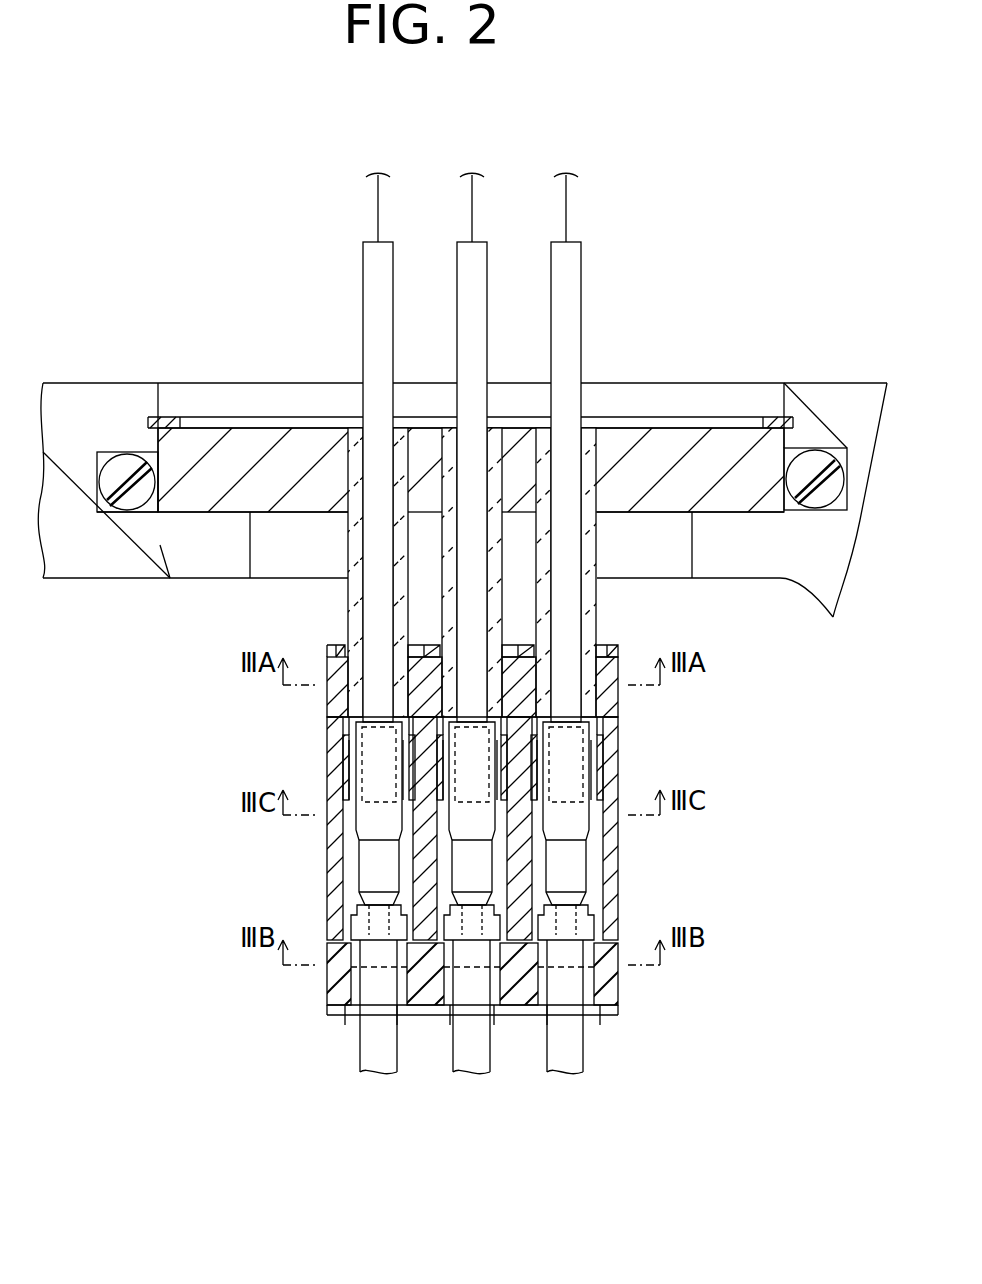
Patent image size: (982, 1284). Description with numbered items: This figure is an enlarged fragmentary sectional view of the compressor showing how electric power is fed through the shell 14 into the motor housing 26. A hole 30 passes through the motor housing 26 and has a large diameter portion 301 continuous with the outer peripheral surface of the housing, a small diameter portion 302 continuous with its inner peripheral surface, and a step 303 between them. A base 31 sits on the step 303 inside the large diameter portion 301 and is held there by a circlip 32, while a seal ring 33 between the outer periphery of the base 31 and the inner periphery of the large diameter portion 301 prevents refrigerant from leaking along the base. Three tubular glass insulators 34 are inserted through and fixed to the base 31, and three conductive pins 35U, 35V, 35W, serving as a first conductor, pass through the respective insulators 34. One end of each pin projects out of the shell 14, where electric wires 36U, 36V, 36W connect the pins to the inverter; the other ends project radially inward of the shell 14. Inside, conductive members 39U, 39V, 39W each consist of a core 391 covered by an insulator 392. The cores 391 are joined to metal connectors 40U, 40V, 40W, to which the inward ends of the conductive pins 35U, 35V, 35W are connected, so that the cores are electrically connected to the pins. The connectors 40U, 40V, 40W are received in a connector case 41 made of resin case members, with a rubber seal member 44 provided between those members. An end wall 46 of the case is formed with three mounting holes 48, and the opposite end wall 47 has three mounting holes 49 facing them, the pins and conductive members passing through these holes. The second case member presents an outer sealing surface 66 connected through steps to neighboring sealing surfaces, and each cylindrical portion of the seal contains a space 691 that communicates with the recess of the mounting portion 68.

The shell 14 is at (60, 383).
The motor housing 26 is at (115, 398).
The hole 30 is at (297, 635).
The large diameter portion 301 is at (160, 545).
The small diameter portion 302 is at (258, 560).
The step 303 is at (215, 528).
The base 31 is at (245, 440).
The circlip 32 is at (283, 425).
The seal ring 33 is at (120, 464).
The tubular insulator 34 is at (350, 540).
The conductive pin 35U is at (385, 272).
The conductive pin 35V is at (480, 272).
The conductive pin 35W is at (574, 272).
The electric wire 36U is at (376, 208).
The electric wire 36V is at (470, 208).
The electric wire 36W is at (564, 208).
The conductive member 39U is at (232, 968).
The conductive member 39V is at (497, 1125).
The conductive member 39W is at (645, 1120).
The core 391 is at (370, 968).
The insulator 392 is at (365, 990).
The connector 40U is at (375, 880).
The connector 40V is at (455, 818).
The connector 40W is at (580, 878).
The connector case 41 is at (680, 733).
The seal member 44 is at (610, 978).
The end wall 46 is at (620, 650).
The opposite end wall 47 is at (327, 1020).
The mounting hole 48 is at (338, 645).
The mounting hole 49 is at (345, 1018).
The outer sealing surface 66 is at (345, 745).
The mounting portion 68 is at (345, 772).
The space 691 is at (358, 695).